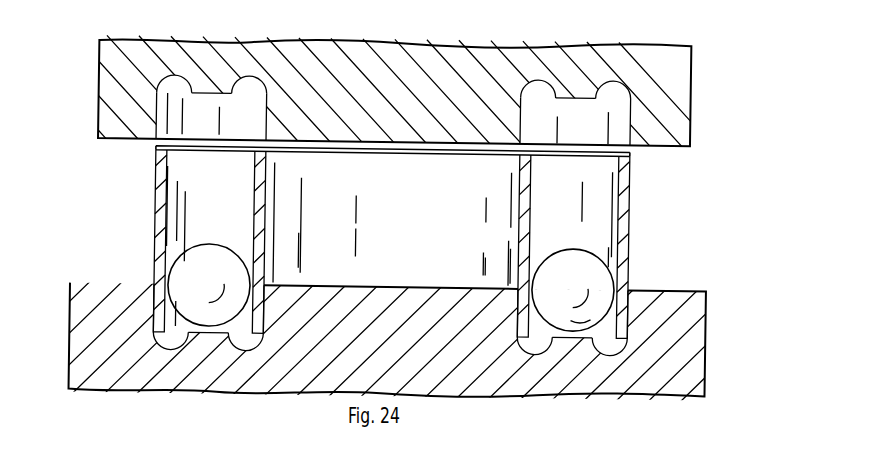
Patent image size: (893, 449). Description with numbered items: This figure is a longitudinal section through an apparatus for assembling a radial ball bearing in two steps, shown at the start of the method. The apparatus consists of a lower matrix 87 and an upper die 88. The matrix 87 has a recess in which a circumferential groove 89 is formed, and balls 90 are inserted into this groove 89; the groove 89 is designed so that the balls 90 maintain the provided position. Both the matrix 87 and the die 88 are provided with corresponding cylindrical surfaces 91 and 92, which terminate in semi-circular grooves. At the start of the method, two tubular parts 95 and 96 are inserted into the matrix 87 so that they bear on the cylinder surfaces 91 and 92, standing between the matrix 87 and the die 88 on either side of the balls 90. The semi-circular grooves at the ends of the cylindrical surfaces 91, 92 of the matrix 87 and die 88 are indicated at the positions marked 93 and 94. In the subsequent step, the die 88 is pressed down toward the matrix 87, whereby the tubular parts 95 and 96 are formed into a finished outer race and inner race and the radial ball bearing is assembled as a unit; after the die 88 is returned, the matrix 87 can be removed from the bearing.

The matrix 87 is at (697, 326).
The die 88 is at (681, 122).
The circumferential groove 89 is at (569, 337).
The balls 90 is at (572, 252).
The cylindrical surface 91 is at (634, 112).
The cylindrical surface 92 is at (521, 109).
The outer sealing bead 93 is at (623, 84).
The inner sealing bead 94 is at (531, 80).
The tubular part 95 is at (620, 226).
The tubular part 96 is at (521, 234).